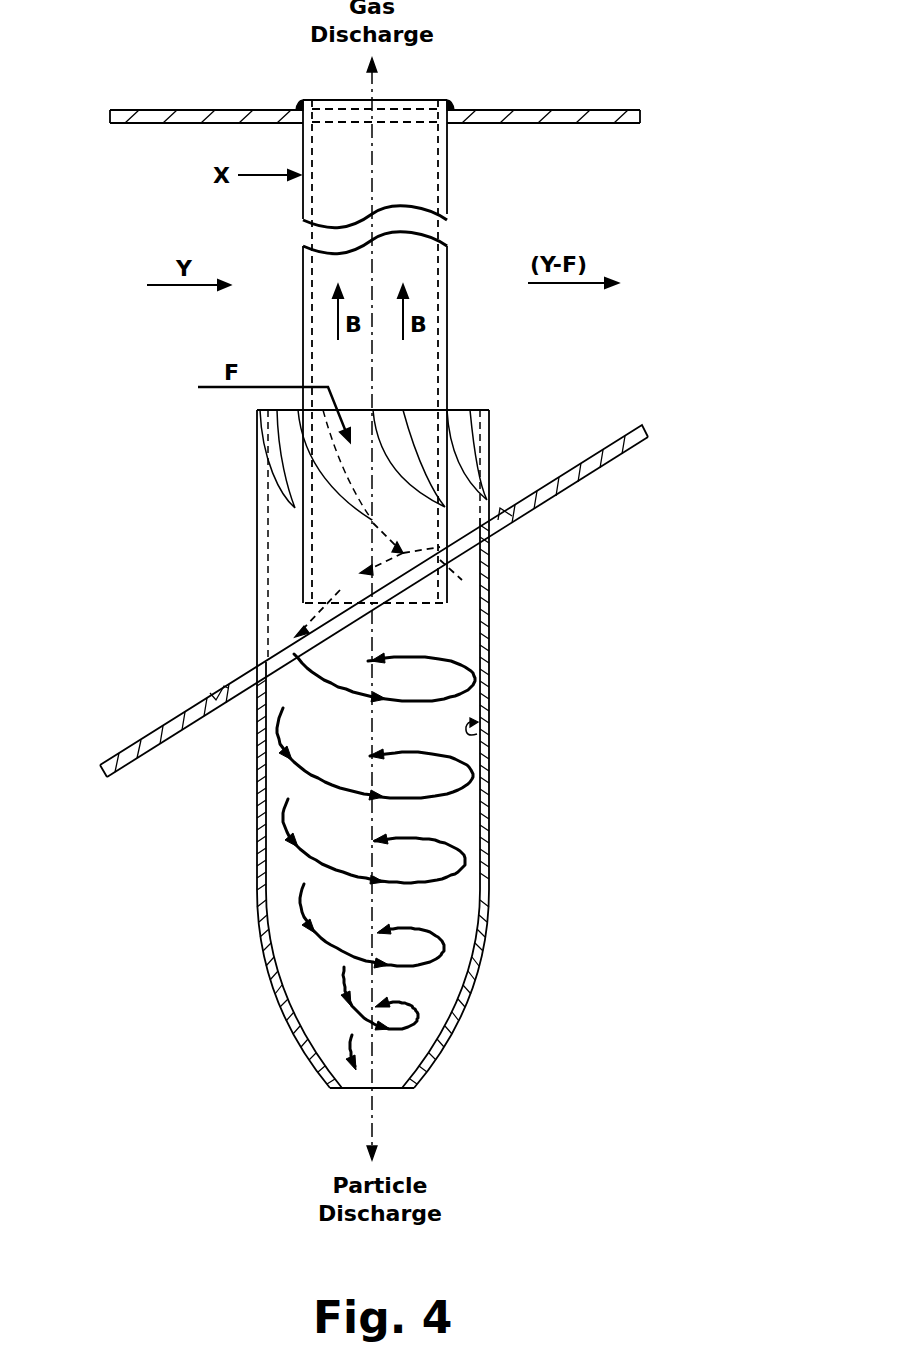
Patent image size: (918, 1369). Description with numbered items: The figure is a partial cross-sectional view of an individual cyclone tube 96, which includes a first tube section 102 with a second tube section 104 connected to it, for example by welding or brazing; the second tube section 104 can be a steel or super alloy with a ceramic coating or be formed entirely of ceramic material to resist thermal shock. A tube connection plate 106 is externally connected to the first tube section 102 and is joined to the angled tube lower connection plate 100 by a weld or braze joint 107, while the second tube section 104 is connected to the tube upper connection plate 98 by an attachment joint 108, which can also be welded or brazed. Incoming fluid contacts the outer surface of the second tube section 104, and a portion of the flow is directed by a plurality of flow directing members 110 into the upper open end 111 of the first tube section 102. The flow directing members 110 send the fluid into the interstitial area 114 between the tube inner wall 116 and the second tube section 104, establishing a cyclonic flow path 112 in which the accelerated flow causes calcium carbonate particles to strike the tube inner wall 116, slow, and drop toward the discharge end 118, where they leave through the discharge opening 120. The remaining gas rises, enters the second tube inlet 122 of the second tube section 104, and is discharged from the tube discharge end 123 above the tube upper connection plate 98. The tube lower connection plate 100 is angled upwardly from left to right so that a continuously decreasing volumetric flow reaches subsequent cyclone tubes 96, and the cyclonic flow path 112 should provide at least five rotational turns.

The cyclone tube 96 is at (118, 400).
The tube upper connection plate 98 is at (597, 123).
The tube lower connection plate 100 is at (603, 462).
The first tube section 102 is at (487, 878).
The second tube section 104 is at (450, 367).
The tube connection plate 106 is at (507, 533).
The weld or braze joint 107 is at (210, 692).
The attachment joint 108 is at (452, 105).
The flow directing members 110 is at (330, 467).
The upper open end 111 is at (465, 410).
The cyclonic flow path 112 is at (475, 937).
The interstitial area 114 is at (291, 558).
The tube inner wall 116 is at (478, 732).
The discharge end 118 is at (295, 1030).
The discharge opening 120 is at (397, 1087).
The second tube inlet 122 is at (427, 597).
The tube discharge end 123 is at (323, 100).